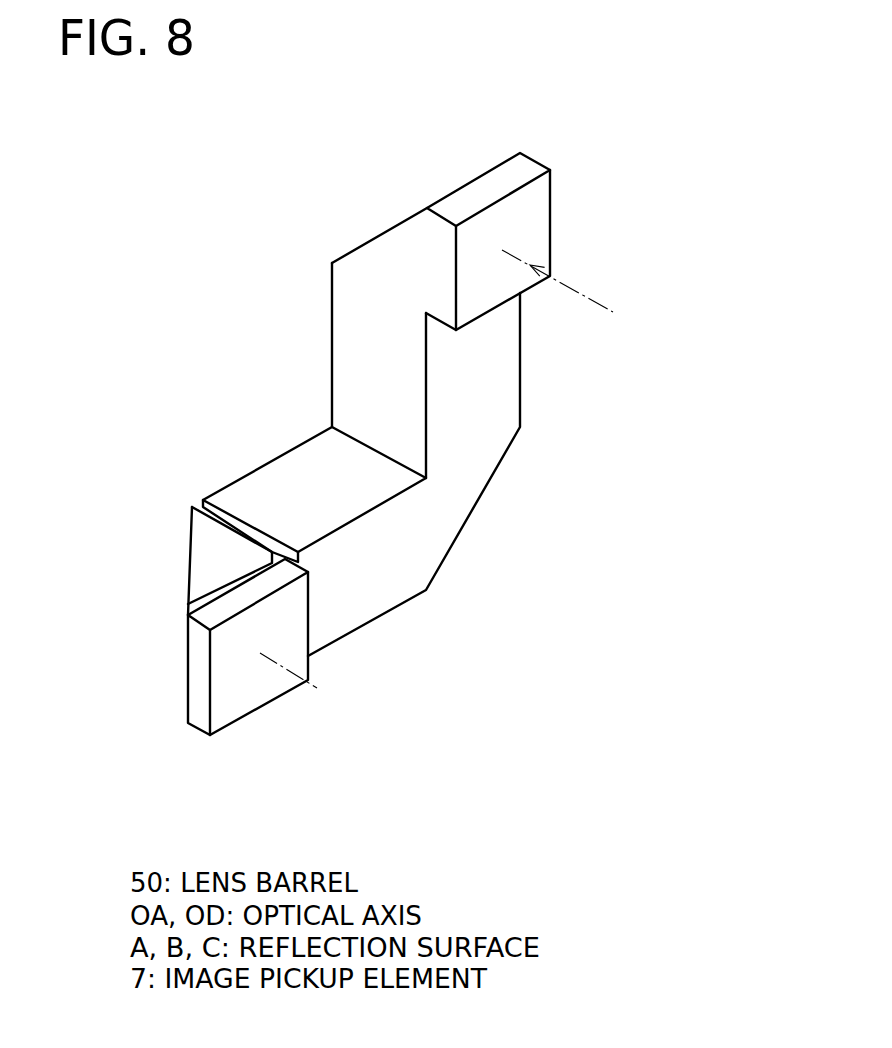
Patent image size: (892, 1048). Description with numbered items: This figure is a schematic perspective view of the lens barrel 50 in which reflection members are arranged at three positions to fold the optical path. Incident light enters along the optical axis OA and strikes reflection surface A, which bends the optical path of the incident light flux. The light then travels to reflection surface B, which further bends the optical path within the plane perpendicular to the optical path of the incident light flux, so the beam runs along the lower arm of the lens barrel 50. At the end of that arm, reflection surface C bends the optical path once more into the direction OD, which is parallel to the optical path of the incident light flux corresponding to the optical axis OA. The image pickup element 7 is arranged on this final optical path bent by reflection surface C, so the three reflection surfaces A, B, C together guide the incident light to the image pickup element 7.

The lens barrel 50 is at (349, 389).
The image pickup element 7 is at (233, 703).
The reflection surface A is at (393, 202).
The reflection surface B is at (497, 500).
The reflection surface C is at (178, 560).
The optical axis OA is at (580, 291).
The optical axis OD is at (312, 688).